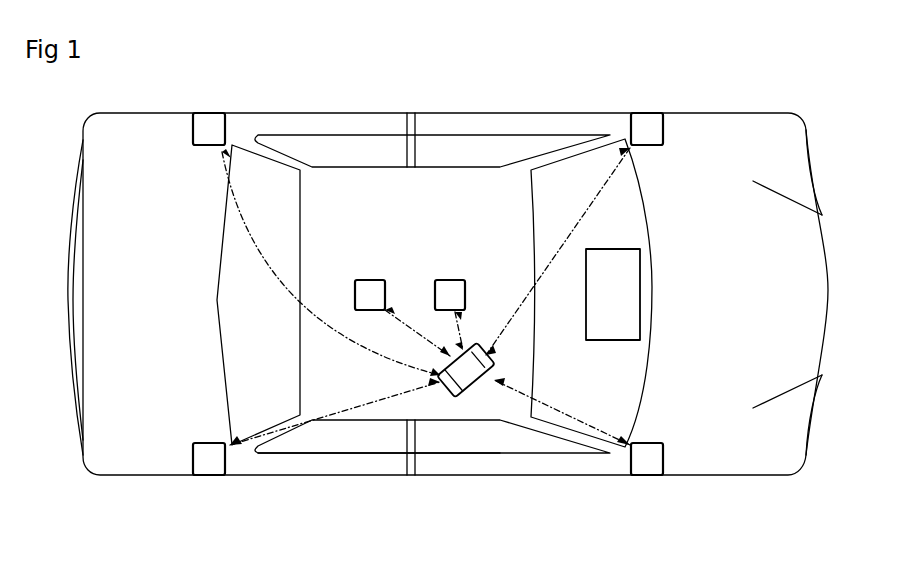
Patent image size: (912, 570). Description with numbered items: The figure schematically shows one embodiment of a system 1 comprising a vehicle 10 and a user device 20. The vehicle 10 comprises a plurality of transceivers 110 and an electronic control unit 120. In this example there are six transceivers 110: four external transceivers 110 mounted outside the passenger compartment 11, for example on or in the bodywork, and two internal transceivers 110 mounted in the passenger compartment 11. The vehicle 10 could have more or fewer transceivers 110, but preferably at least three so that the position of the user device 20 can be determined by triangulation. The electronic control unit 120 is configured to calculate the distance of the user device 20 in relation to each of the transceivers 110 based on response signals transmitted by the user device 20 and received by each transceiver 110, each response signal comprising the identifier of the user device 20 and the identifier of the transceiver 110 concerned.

The system 1 is at (750, 98).
The vehicle 10 is at (347, 113).
The passenger compartment 11 is at (367, 447).
The user device 20 is at (467, 395).
The transceivers 110 is at (208, 120).
The electronic control unit 120 is at (614, 341).